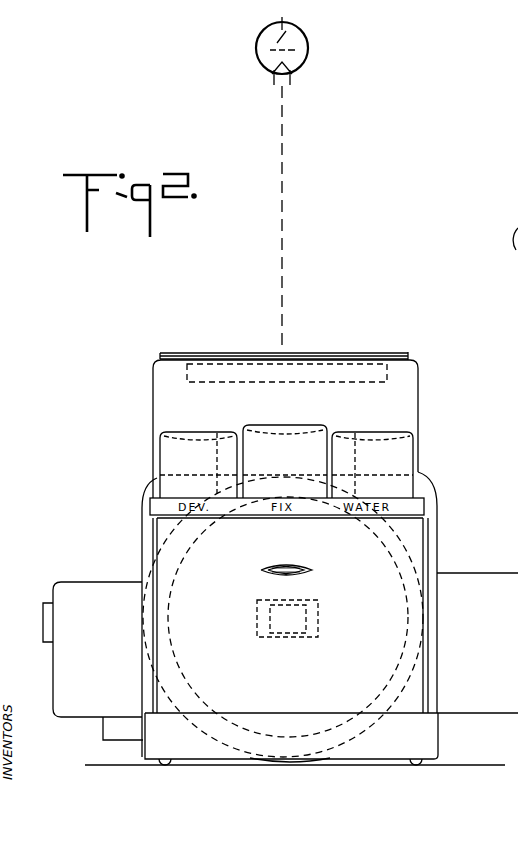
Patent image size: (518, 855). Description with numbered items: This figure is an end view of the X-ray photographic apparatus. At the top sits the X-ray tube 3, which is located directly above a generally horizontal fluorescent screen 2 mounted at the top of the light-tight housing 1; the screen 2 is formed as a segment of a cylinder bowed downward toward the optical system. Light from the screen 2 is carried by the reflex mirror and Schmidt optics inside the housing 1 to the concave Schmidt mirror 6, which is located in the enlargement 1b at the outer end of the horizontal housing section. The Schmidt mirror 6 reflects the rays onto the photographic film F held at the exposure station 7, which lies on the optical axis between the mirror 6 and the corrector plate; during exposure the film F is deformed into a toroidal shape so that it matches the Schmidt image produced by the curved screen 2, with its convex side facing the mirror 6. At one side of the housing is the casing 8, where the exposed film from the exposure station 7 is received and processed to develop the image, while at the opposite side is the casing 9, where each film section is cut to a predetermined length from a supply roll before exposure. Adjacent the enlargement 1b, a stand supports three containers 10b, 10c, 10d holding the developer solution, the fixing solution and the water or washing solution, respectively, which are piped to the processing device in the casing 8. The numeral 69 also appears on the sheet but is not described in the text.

The light-tight housing 1 is at (420, 398).
The enlargement 1b is at (433, 503).
The fluorescent screen 2 is at (370, 356).
The X-ray tube 3 is at (306, 68).
The Schmidt mirror 6 is at (325, 736).
The exposure station 7 is at (259, 625).
The photographic film F is at (280, 615).
The casing 8 is at (68, 690).
The casing 9 is at (472, 690).
The container 10b is at (170, 458).
The container 10c is at (290, 460).
The container 10d is at (393, 458).
The reference 69 is at (517, 208).